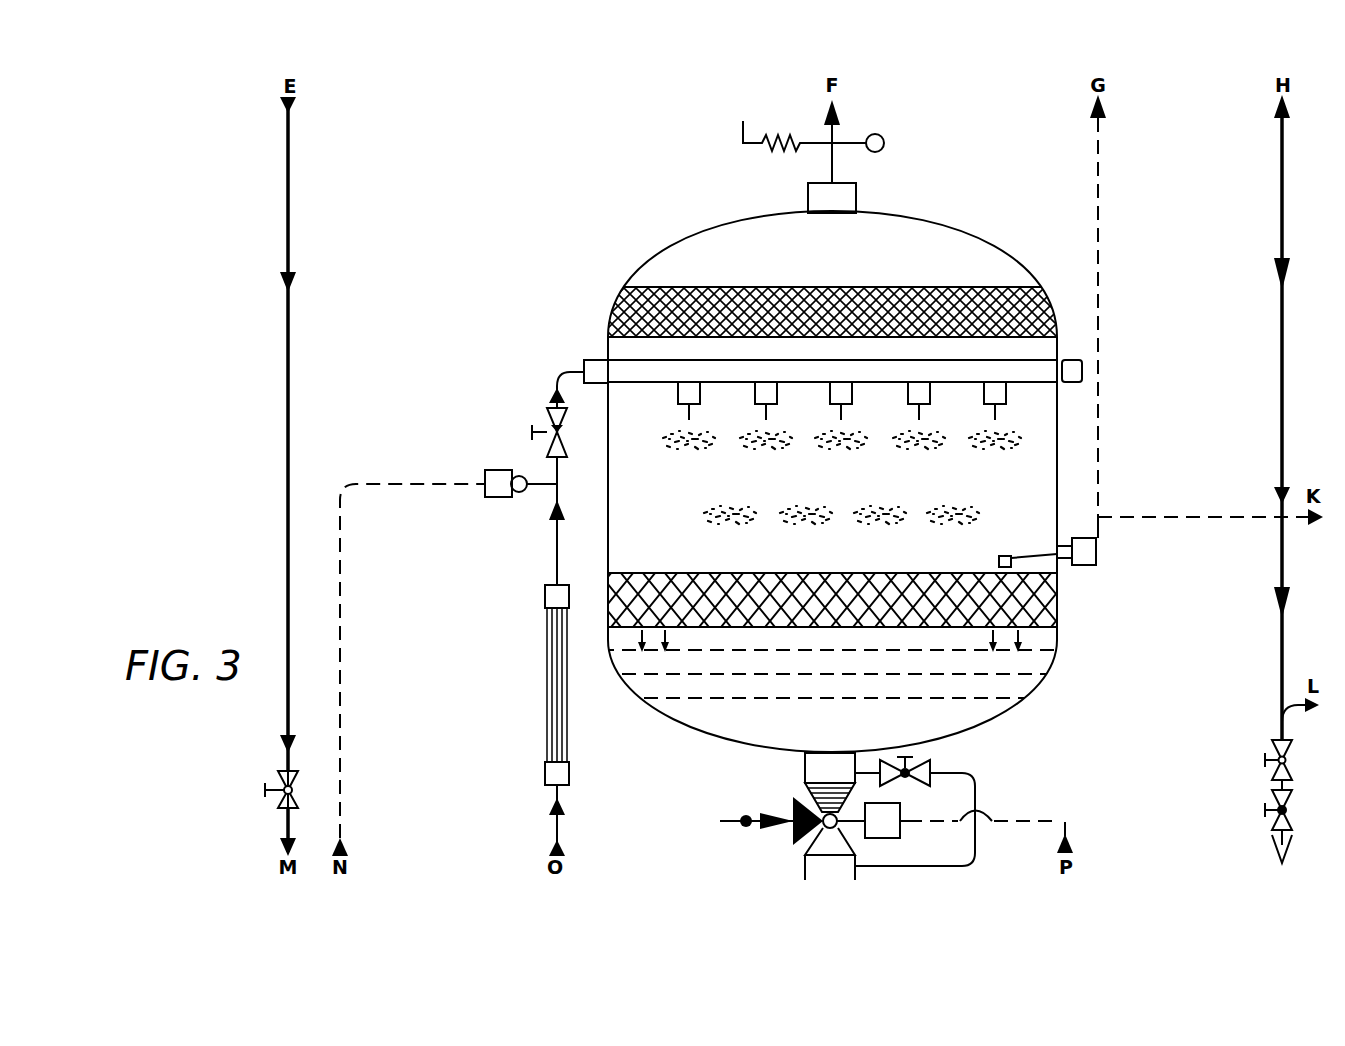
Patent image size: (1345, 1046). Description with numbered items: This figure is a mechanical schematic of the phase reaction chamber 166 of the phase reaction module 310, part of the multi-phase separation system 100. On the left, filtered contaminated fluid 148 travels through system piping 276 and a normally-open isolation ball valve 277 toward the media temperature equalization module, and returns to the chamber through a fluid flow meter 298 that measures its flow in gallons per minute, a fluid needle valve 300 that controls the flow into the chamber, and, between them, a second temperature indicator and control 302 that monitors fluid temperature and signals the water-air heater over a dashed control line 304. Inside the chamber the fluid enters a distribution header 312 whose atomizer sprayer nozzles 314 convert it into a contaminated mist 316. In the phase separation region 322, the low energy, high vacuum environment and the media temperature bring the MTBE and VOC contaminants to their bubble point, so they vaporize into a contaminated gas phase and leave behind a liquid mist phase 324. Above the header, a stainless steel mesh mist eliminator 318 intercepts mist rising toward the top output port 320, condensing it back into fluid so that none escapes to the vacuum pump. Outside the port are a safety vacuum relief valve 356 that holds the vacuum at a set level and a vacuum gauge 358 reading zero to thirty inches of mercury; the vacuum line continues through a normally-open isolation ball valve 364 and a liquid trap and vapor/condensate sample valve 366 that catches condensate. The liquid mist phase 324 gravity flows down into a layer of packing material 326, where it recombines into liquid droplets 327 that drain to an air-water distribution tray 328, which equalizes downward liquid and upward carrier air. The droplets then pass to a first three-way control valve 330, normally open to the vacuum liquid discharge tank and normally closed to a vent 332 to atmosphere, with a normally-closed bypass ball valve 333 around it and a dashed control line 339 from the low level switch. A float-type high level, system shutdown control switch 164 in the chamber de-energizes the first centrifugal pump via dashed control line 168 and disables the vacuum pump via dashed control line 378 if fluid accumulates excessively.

The multi-phase separation system 100 is at (486, 138).
The filtered contaminated fluid 148 is at (288, 452).
The high level, system shutdown control switch 164 is at (1085, 565).
The phase reaction chamber 166 is at (648, 248).
The dashed control line 168 is at (1100, 218).
The system piping 276 is at (288, 193).
The normally-open isolation ball valve 277 is at (282, 797).
The fluid flow meter 298 is at (545, 776).
The fluid needle valve 300 is at (546, 417).
The second temperature indicator and control 302 is at (487, 470).
The dashed control line 304 is at (342, 651).
The phase reaction module 310 is at (946, 213).
The distribution header 312 is at (587, 360).
The atomizer sprayer nozzles 314 is at (1010, 398).
The contaminated mist 316 is at (1010, 434).
The mist eliminator 318 is at (680, 290).
The top output port 320 is at (808, 200).
The phase separation region 322 is at (960, 480).
The liquid mist phase 324 is at (715, 514).
The layer of packing material 326 is at (1030, 612).
The liquid droplets 327 is at (1022, 632).
The air-water distribution tray 328 is at (657, 686).
The first three-way control valve 330 is at (805, 770).
The vent to atmosphere 332 is at (722, 821).
The normally-closed bypass ball valve 333 is at (940, 770).
The dashed control line 339 is at (1055, 822).
The safety vacuum relief valve 356 is at (745, 152).
The vacuum gauge 358 is at (884, 143).
The normally-open isolation ball valve 364 is at (1274, 756).
The liquid trap and vapor/condensate sample valve 366 is at (1272, 805).
The dashed control line 378 is at (1198, 519).